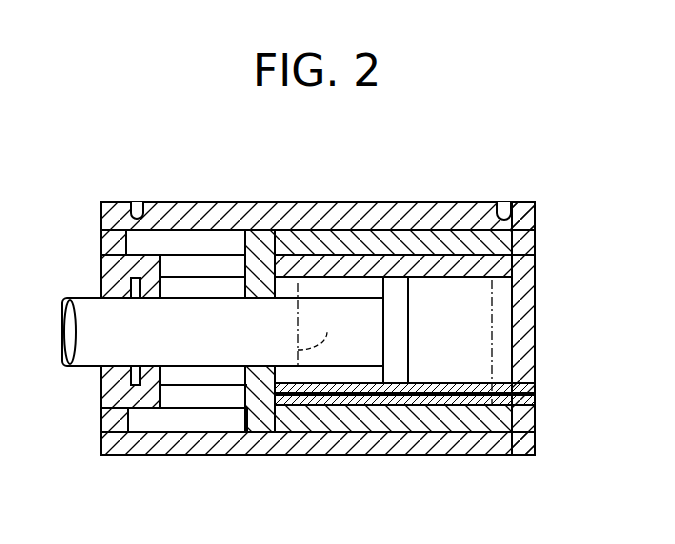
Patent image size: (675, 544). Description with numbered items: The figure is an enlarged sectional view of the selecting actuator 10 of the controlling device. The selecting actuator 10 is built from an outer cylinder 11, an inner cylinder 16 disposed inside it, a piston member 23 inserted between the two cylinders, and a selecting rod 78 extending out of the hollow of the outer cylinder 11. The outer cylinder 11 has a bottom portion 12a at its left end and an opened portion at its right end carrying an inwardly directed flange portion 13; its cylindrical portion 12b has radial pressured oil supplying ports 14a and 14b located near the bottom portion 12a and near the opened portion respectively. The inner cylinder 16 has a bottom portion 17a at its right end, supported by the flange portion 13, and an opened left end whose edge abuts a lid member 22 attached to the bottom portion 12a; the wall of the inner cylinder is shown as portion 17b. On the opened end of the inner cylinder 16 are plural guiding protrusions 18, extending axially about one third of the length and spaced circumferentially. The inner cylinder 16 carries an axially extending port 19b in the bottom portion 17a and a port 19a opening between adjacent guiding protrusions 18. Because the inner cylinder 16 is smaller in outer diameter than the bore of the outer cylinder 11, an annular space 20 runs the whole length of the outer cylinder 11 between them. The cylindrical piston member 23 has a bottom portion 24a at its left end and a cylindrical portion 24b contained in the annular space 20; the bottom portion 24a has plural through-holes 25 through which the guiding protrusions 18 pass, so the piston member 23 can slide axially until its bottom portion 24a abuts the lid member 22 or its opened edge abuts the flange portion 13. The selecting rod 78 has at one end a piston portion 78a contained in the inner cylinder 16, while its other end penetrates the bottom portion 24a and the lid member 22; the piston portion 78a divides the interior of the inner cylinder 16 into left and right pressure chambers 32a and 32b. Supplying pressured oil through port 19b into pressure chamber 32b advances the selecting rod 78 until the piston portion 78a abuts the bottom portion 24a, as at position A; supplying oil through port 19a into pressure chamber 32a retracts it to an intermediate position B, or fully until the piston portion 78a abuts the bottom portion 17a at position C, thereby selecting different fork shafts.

The selecting actuator 10 is at (349, 147).
The outer cylinder 11 is at (454, 199).
The bottom portion 12a is at (105, 240).
The cylindrical portion 12b is at (407, 203).
The flange portion 13 is at (537, 222).
The pressured oil supplying port 14a is at (137, 202).
The pressured oil supplying port 14b is at (507, 212).
The inner cylinder 16 is at (545, 279).
The bottom portion 17a is at (530, 344).
The peripheral wall of inner cylinder 17b is at (430, 271).
The guiding protrusions 18 is at (177, 268).
The port 19a is at (534, 397).
The port 19b is at (527, 381).
The annular space 20 is at (212, 420).
The lid member 22 is at (101, 277).
The piston member 23 is at (303, 233).
The bottom portion 24a is at (257, 287).
The cylindrical portion 24b is at (430, 422).
The through-holes 25 is at (270, 396).
The pressure chamber 32a is at (365, 373).
The pressure chamber 32b is at (483, 320).
The selecting rod 78 is at (62, 323).
The piston portion 78a is at (400, 347).
The position A is at (320, 324).
The position B is at (423, 331).
The position C is at (494, 406).